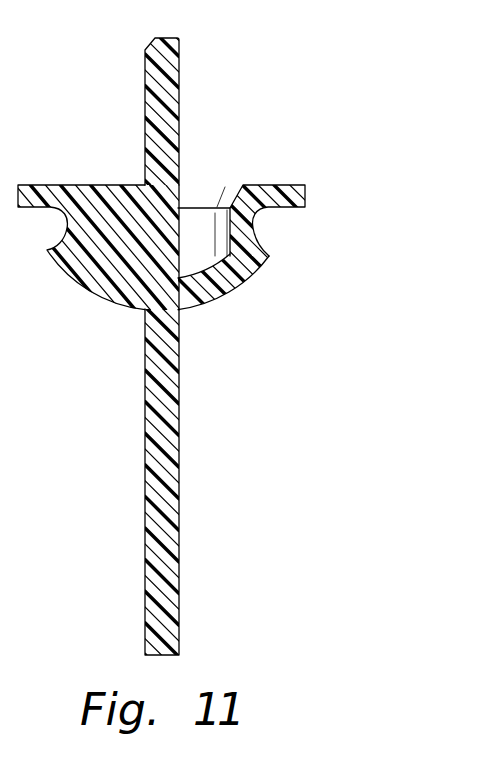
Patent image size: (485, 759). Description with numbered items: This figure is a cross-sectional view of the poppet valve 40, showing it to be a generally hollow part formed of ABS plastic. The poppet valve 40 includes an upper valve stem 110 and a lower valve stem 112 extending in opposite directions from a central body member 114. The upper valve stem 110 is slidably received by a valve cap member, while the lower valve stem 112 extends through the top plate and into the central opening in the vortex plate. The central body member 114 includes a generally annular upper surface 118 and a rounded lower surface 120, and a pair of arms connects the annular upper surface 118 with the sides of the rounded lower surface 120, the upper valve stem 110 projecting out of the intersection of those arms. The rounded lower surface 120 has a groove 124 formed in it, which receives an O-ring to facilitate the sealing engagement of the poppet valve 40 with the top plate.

The poppet valve 40 is at (123, 113).
The upper valve stem 110 is at (165, 138).
The lower valve stem 112 is at (179, 488).
The central body member 114 is at (108, 250).
The annular upper surface 118 is at (283, 185).
The rounded lower surface 120 is at (212, 300).
The groove 124 is at (257, 231).